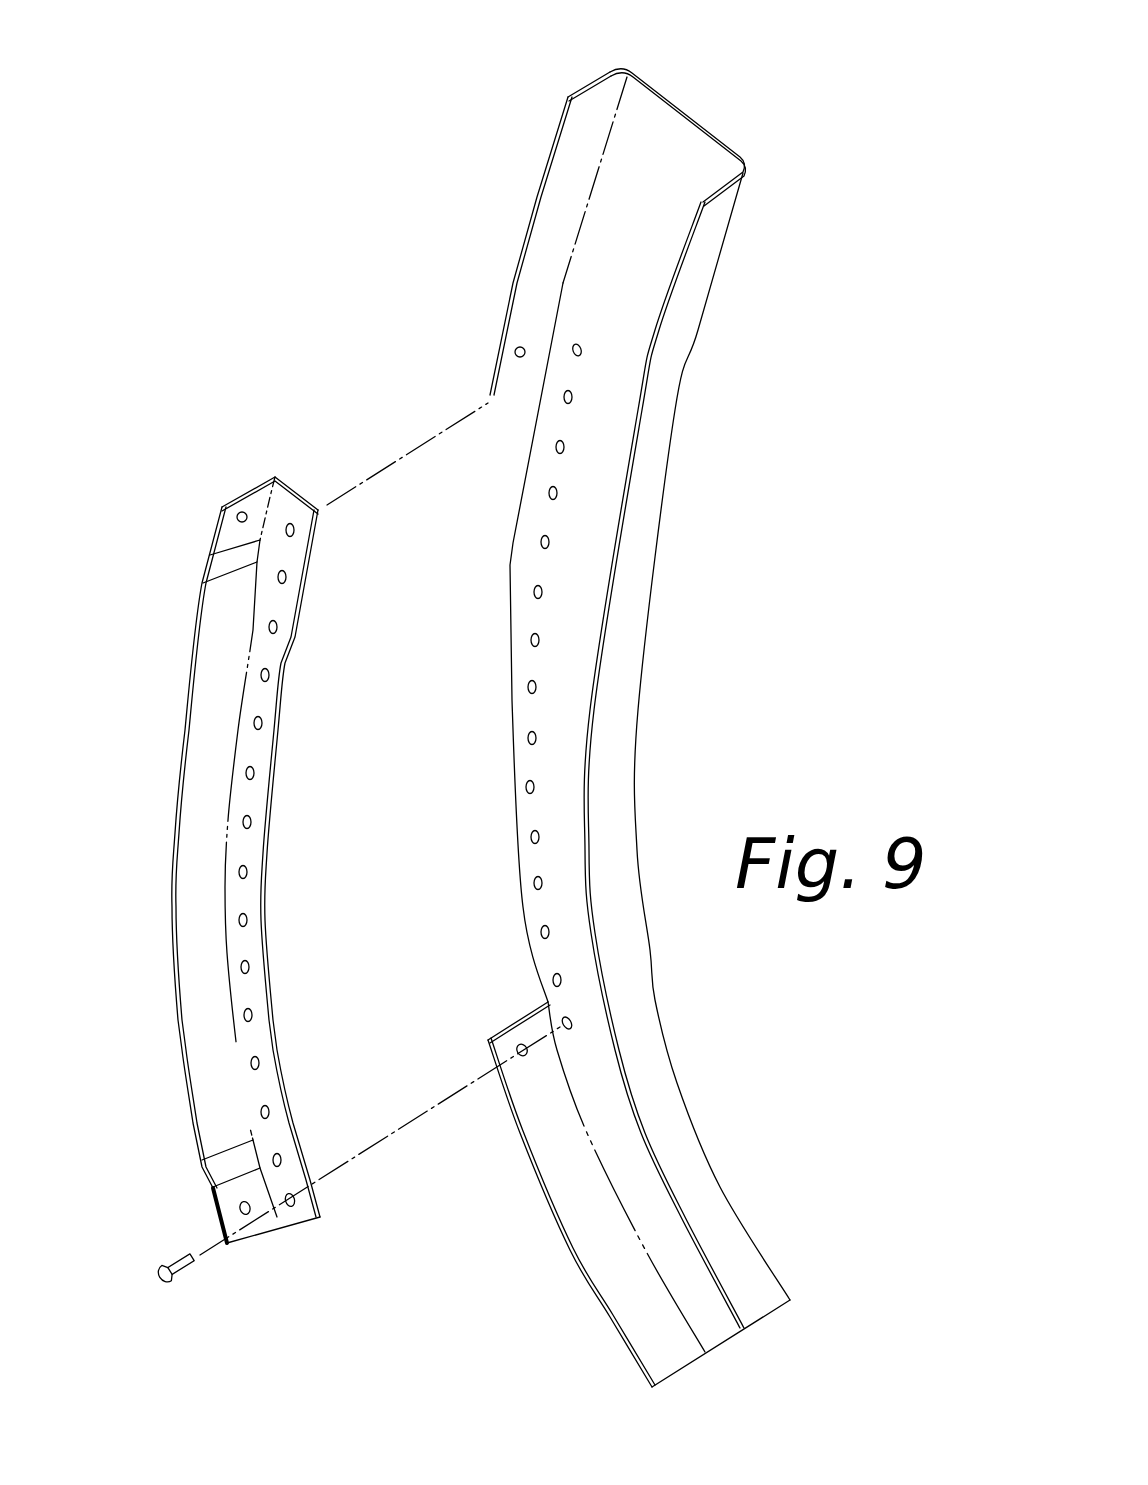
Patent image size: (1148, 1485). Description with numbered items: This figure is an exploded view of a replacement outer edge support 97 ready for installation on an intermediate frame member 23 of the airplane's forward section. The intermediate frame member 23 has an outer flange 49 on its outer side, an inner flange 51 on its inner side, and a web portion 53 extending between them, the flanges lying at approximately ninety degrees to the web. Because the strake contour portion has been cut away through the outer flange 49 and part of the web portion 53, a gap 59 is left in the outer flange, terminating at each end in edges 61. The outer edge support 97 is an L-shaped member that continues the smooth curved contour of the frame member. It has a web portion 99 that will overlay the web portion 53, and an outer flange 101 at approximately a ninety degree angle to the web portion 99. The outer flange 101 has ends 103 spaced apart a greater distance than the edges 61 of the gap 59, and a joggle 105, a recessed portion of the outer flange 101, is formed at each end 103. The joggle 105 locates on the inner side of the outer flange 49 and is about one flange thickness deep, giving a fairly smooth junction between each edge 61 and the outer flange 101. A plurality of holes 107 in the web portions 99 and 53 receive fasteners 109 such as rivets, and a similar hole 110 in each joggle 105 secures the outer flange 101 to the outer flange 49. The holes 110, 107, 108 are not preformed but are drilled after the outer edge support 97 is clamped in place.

The intermediate frame member 23 is at (752, 165).
The outer flange 49 is at (587, 95).
The inner flange 51 is at (700, 255).
The web portion 53 is at (668, 127).
The gap 59 is at (522, 494).
The edges 61 is at (574, 352).
The outer edge support 97 is at (180, 775).
The web portion 99 is at (252, 1040).
The outer flange 101 is at (185, 825).
The ends 103 is at (248, 496).
The joggle 105 is at (213, 553).
The holes 107 is at (290, 1210).
The holes 108 is at (568, 1024).
The fasteners 109 is at (175, 1282).
The hole 110 is at (250, 1216).